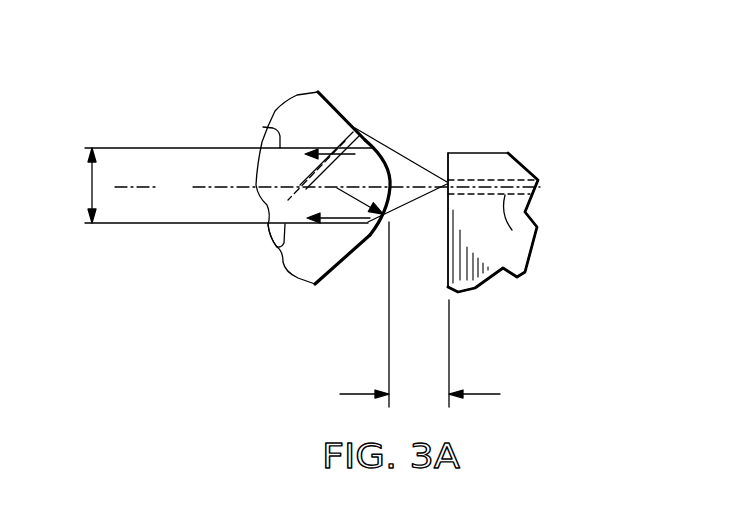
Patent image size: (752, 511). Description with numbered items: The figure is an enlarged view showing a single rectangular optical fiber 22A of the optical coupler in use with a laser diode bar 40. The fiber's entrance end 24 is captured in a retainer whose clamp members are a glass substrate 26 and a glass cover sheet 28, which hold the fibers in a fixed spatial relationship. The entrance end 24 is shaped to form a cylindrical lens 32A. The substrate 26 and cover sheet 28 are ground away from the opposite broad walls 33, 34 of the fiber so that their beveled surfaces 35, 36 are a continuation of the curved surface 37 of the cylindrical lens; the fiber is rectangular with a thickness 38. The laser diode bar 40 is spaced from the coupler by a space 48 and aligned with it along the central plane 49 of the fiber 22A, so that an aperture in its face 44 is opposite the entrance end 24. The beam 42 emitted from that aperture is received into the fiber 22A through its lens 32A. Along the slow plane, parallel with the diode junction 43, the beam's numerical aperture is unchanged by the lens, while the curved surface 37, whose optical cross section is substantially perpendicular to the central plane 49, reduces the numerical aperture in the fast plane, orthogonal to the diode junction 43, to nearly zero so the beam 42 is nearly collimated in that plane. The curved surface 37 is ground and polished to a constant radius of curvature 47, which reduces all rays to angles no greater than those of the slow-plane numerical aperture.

The rectangular optical fiber 22A is at (298, 138).
The entrance end 24 is at (370, 142).
The glass substrate 26 is at (278, 255).
The glass cover sheet 28 is at (273, 108).
The cylindrical lens 32A is at (404, 195).
The broad wall 33 is at (263, 127).
The broad wall 34 is at (280, 247).
The beveled surface 35 is at (326, 282).
The beveled surface 36 is at (332, 108).
The curved surface 37 is at (400, 202).
The thickness 38 is at (92, 147).
The laser diode bar 40 is at (508, 155).
The beam 42 is at (407, 163).
The diode junction 43 is at (512, 230).
The face 44 is at (448, 160).
The radius of curvature 47 is at (353, 193).
The space 48 is at (420, 316).
The central plane 49 is at (327, 187).